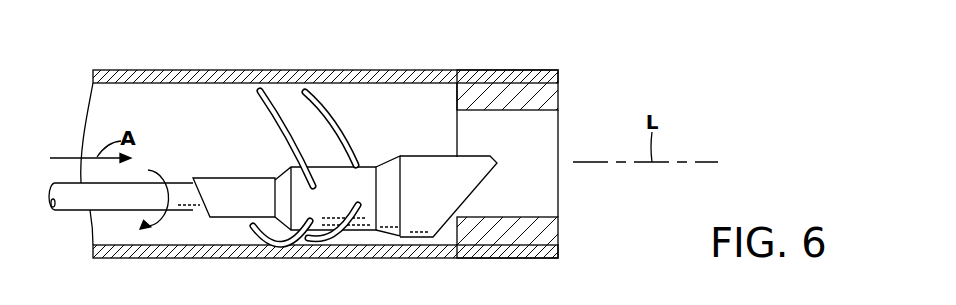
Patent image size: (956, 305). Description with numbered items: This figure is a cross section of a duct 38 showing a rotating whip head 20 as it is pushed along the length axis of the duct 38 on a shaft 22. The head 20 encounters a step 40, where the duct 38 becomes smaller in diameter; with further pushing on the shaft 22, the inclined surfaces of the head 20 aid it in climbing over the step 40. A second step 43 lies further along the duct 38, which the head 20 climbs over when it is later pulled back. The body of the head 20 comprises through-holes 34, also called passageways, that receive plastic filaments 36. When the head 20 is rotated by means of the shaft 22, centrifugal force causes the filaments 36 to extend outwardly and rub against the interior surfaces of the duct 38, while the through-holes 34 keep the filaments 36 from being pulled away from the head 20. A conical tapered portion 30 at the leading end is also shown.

The head 20 is at (266, 150).
The shaft 22 is at (65, 212).
The conical deflector 30 is at (481, 182).
The through-holes 34 is at (305, 220).
The plastic filaments 36 is at (268, 108).
The duct 38 is at (262, 70).
The step 40 is at (457, 97).
The step 43 is at (559, 238).